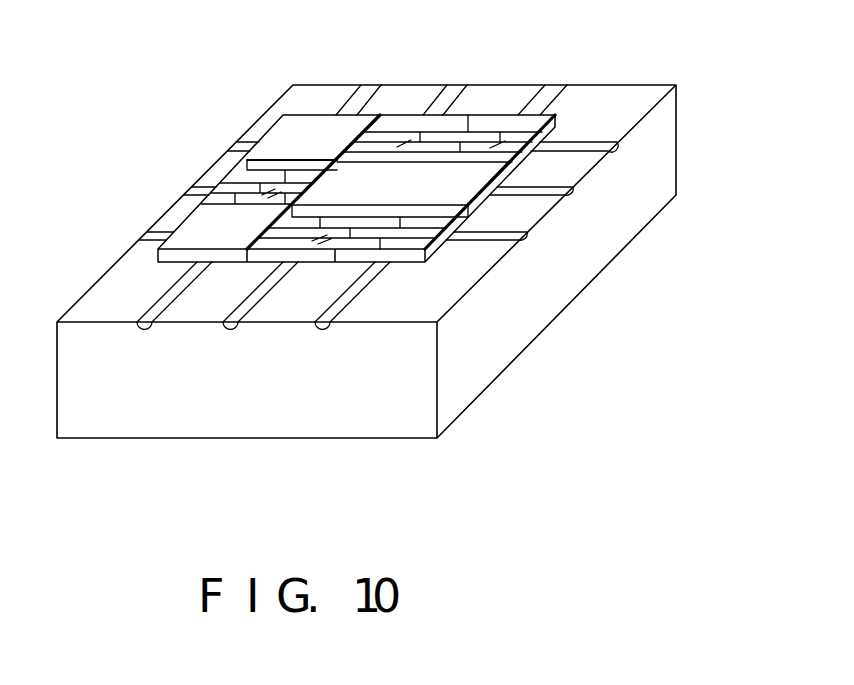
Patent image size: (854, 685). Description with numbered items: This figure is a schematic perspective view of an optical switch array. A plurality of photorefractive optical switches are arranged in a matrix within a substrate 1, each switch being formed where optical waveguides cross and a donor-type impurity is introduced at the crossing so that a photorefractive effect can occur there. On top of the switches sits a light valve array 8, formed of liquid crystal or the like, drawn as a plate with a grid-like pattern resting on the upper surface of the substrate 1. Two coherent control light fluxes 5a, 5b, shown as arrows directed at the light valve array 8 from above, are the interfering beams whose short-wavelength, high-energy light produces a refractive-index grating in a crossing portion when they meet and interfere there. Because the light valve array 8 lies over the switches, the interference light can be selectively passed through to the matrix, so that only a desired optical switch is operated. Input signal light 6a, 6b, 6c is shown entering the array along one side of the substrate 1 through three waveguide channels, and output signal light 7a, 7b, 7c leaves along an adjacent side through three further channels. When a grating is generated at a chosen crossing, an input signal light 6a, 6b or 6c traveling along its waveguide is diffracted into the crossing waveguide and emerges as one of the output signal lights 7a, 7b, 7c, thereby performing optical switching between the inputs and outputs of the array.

The substrate 1 is at (496, 375).
The control light flux 5a is at (293, 32).
The control light flux 5b is at (460, 284).
The input signal light 6a is at (88, 380).
The input signal light 6b is at (175, 383).
The input signal light 6c is at (263, 388).
The output signal light 7a is at (580, 194).
The output signal light 7b is at (532, 239).
The output signal light 7c is at (622, 150).
The light valve array 8 is at (193, 223).